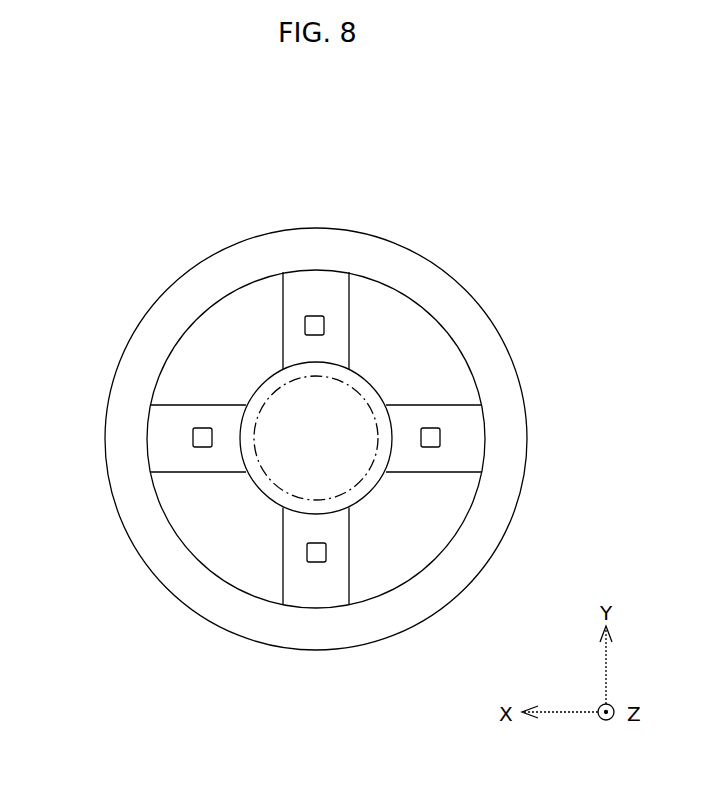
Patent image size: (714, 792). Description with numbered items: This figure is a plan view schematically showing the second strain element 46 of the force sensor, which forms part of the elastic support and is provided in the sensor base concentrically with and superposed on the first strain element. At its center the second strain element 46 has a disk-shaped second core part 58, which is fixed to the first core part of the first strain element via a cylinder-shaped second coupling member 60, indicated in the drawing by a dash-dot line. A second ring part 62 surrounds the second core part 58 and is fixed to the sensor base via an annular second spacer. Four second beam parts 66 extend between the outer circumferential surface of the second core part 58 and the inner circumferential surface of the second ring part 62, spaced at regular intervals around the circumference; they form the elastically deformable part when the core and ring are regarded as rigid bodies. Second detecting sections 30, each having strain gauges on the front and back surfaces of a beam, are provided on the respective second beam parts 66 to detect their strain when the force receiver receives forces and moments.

The second strain element 46 is at (385, 136).
The second ring part 62 is at (150, 573).
The second beam parts 66 is at (348, 300).
The second detecting sections 30 is at (305, 325).
The second core part 58 is at (370, 488).
The second coupling member 60 is at (270, 400).